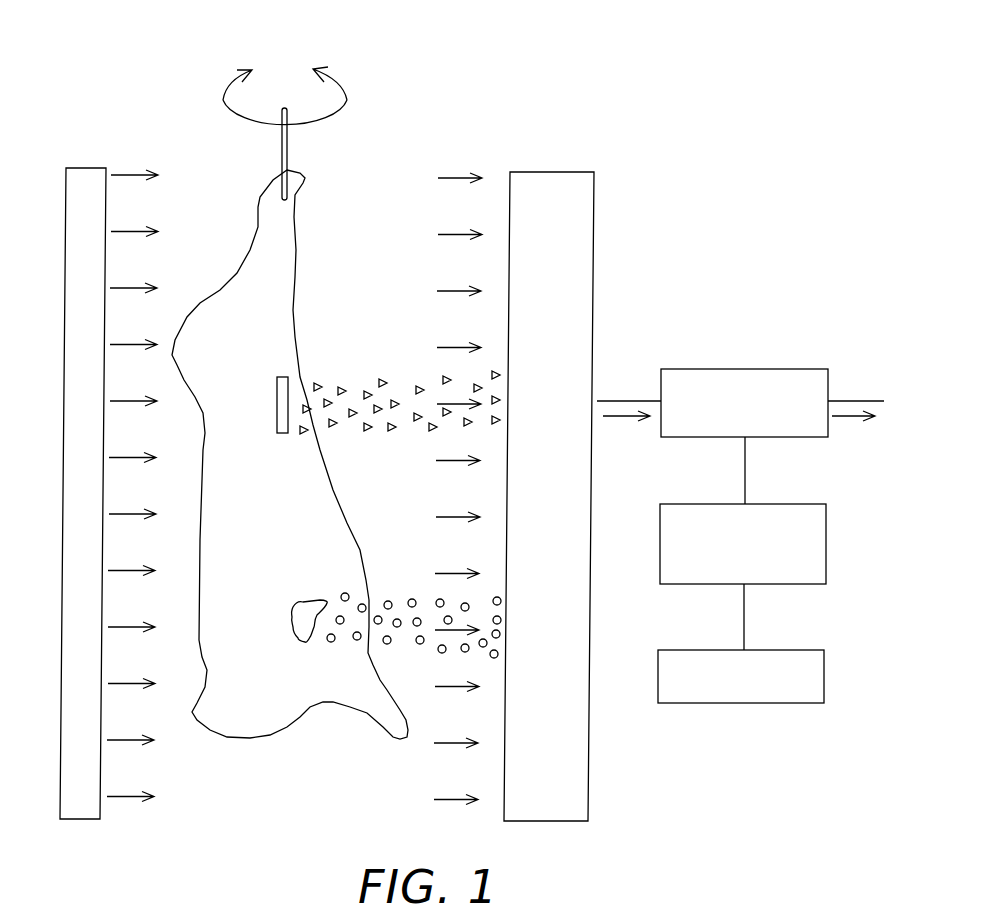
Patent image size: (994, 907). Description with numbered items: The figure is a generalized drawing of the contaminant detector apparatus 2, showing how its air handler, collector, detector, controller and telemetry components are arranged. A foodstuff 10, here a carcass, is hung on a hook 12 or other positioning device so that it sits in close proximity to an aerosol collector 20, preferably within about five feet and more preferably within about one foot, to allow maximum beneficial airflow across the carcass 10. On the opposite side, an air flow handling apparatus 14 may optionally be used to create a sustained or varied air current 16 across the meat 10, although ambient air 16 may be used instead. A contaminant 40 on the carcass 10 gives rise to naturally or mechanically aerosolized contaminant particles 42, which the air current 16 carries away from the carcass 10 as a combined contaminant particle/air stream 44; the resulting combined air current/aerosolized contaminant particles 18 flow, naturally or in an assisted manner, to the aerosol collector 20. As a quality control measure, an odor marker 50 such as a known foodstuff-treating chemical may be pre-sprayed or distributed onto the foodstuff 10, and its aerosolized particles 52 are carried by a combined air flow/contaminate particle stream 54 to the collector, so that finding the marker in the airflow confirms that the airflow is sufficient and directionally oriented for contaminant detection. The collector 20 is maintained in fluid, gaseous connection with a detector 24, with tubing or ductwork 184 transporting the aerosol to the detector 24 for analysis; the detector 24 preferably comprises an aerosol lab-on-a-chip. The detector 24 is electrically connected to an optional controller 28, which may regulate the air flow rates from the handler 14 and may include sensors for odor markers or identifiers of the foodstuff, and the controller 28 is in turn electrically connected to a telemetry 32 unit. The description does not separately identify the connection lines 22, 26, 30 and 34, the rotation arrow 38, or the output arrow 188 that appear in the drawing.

The contaminant detector apparatus 2 is at (519, 48).
The foodstuff 10 is at (297, 262).
The hook 12 is at (283, 167).
The air flow handling apparatus 14 is at (85, 167).
The air current 16 is at (135, 174).
The combined air current/aerosolized contaminant particles 18 is at (458, 177).
The aerosol collector 20 is at (557, 172).
The signal line 22 is at (612, 401).
The detector 24 is at (790, 369).
The detector-controller connection 26 is at (745, 475).
The controller 28 is at (787, 502).
The controller-telemetry connection 30 is at (744, 633).
The telemetry 32 is at (783, 650).
The output line 34 is at (847, 401).
The rotation of carcass 38 is at (338, 80).
The contaminant 40 is at (305, 645).
The aerosolized contaminant particles 42 is at (387, 641).
The combined contaminant particle/air stream 44 is at (425, 592).
The odor marker 50 is at (290, 382).
The aerosolized particles of odor marker 52 is at (367, 432).
The combined air flow/contaminate particle stream 54 is at (425, 374).
The tubing or ductwork 184 is at (617, 416).
The output signal arrow 188 is at (835, 417).